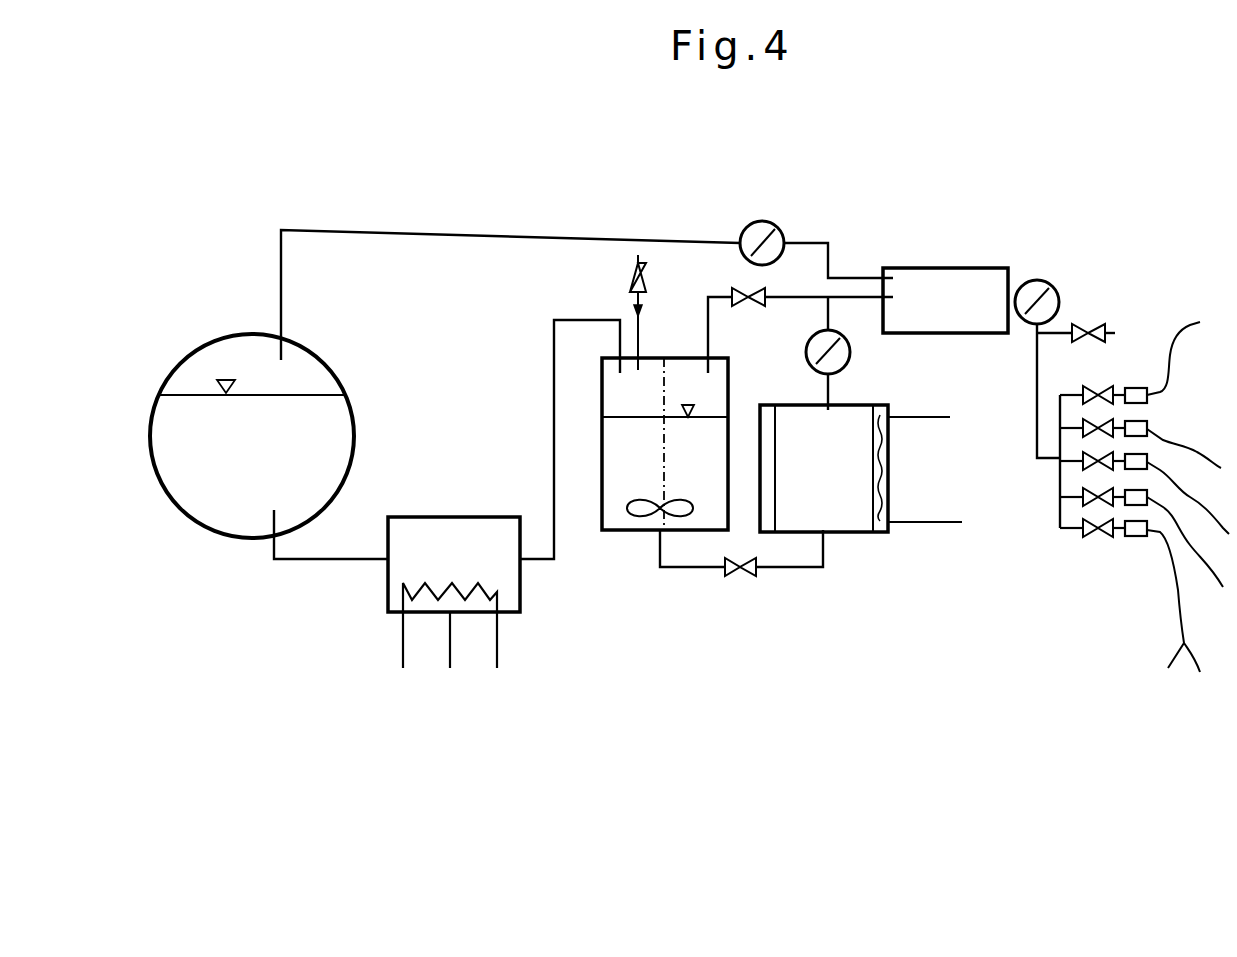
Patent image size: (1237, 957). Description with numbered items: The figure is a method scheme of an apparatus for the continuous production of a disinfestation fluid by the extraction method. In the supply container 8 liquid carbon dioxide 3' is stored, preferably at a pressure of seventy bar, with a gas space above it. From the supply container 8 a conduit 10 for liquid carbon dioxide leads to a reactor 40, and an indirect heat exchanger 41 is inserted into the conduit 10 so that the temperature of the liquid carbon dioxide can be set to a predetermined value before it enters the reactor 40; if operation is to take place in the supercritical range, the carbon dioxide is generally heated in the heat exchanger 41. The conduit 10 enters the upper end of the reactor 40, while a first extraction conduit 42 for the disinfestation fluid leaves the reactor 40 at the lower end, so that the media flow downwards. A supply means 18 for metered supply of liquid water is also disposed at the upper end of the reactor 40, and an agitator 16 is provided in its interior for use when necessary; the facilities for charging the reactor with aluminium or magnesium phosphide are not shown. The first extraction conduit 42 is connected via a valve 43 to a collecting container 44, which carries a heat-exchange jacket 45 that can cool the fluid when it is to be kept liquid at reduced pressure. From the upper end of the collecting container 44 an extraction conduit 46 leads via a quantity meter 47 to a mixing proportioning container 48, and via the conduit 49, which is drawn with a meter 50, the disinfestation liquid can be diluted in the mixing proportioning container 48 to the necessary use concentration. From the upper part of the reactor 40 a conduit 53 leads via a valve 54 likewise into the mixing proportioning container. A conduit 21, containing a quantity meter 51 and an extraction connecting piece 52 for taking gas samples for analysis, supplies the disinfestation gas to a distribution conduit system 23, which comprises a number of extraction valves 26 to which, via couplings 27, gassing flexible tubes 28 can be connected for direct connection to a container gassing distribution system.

The supply container 8 is at (198, 350).
The liquid carbon dioxide 3' is at (186, 538).
The conduit for liquid carbon dioxide 10 is at (354, 560).
The conduit 49 is at (403, 233).
The supply means for water 18 is at (624, 267).
The conduit 53 is at (708, 295).
The pressure gauge 50 is at (752, 222).
The valve 54 is at (755, 290).
The quantity meter 47 is at (848, 342).
The extraction conduit 46 is at (866, 277).
The mixing proportioning container 48 is at (953, 290).
The quantity meter 51 is at (1040, 290).
The conduit 21 is at (1035, 383).
The extraction connecting piece 52 is at (1115, 333).
The reactor 40 is at (610, 505).
The indirect heat exchanger 41 is at (454, 610).
The first extraction conduit 42 is at (690, 568).
The valve 43 is at (750, 577).
The agitator 16 is at (688, 516).
The collecting container 44 is at (866, 540).
The heat-exchange jacket 45 is at (890, 525).
The distribution conduit system 23 is at (1035, 483).
The extraction valves 26 is at (1093, 540).
The couplings 27 is at (1133, 540).
The gassing flexible tubes 28 is at (1188, 514).